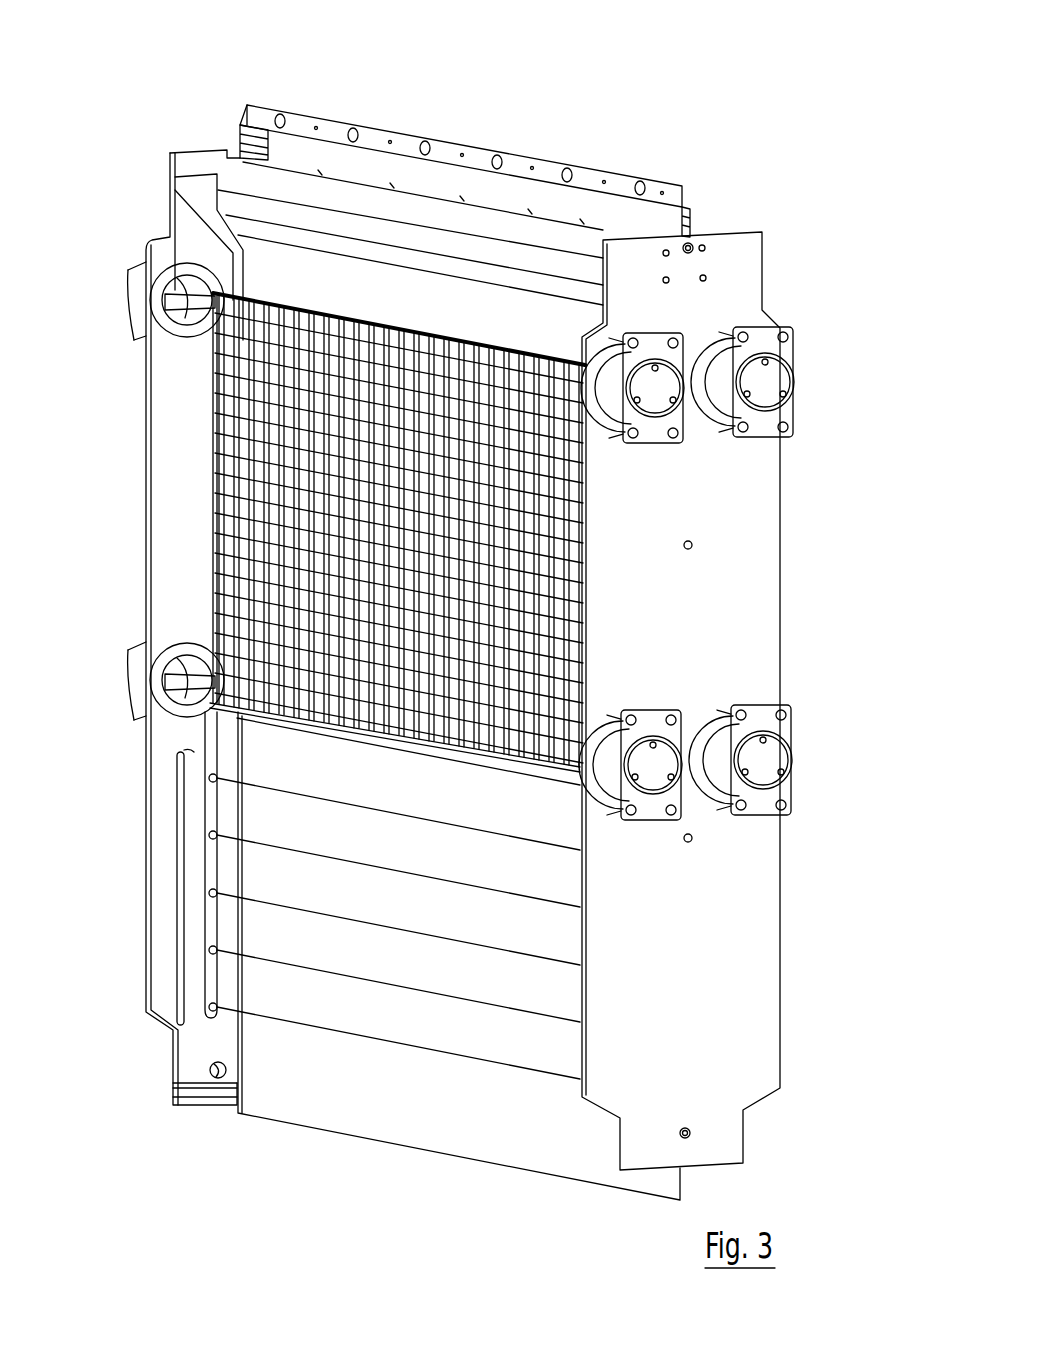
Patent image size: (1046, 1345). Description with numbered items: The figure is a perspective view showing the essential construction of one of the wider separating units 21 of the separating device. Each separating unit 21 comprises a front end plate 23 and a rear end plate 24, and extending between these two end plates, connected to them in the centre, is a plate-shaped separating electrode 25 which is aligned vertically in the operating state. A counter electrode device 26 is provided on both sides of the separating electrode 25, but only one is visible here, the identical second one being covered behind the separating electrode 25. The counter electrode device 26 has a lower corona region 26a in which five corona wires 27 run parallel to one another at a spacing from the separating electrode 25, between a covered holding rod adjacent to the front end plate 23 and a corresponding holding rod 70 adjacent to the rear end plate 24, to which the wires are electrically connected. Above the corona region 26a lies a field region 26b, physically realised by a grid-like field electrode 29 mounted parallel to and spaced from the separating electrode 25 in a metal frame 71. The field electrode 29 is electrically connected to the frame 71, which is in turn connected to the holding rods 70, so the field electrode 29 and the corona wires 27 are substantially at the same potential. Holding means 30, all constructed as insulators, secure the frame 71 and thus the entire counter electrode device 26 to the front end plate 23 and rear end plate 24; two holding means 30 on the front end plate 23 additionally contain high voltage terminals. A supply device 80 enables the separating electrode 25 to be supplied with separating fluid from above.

The separating unit 21 is at (576, 120).
The supply device 80 is at (692, 172).
The separating electrode 25 is at (318, 290).
The holding means 30 is at (150, 290).
The metal frame 71 is at (215, 395).
The rear end plate 24 is at (175, 470).
The counter electrode device 26 is at (395, 532).
The corona region 26a is at (164, 900).
The field region 26b is at (520, 515).
The field electrode 29 is at (530, 640).
The front end plate 23 is at (730, 590).
The holding rod 70 is at (195, 762).
The corona wire 27 is at (410, 880).